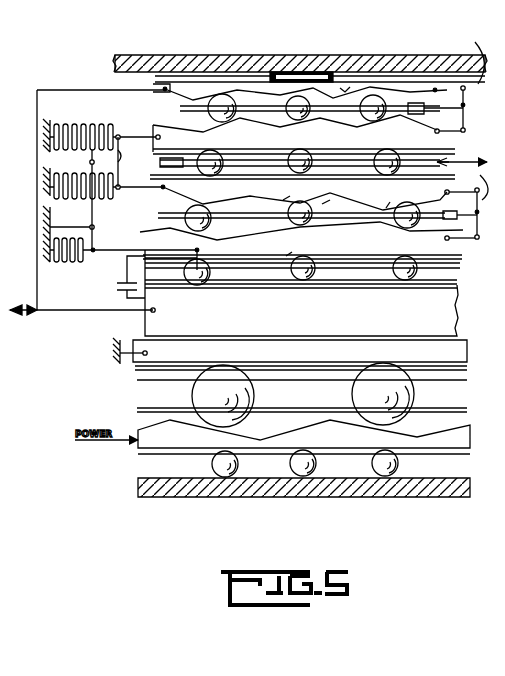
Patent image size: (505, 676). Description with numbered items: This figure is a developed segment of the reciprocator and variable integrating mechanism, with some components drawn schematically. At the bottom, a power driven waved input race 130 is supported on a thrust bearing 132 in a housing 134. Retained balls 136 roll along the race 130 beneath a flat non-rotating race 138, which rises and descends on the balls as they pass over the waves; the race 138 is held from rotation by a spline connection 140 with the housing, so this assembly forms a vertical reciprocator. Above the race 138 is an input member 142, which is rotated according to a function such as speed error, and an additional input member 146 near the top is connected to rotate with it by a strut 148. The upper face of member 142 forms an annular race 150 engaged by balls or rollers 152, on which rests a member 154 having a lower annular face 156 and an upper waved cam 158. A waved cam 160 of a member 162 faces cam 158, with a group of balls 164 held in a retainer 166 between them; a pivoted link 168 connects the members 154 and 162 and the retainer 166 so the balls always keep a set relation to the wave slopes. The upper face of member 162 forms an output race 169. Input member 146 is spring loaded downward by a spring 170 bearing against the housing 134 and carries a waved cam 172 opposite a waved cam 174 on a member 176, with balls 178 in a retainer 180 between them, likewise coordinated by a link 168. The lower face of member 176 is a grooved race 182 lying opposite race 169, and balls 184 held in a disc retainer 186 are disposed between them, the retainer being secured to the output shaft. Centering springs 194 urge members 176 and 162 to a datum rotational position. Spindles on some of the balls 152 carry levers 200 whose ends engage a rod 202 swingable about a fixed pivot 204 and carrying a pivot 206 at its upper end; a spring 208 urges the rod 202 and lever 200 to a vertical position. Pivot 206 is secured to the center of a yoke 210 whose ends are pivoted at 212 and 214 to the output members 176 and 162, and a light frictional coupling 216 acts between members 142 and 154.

The waved input race 130 is at (341, 440).
The thrust bearing 132 is at (212, 464).
The housing 134 is at (204, 57).
The retained balls 136 is at (205, 393).
The flat non-rotating race 138 is at (301, 360).
The spline connection 140 is at (122, 358).
The input member 142 is at (348, 314).
The additional input member 146 is at (158, 88).
The strut 148 is at (38, 102).
The annular race 150 is at (245, 286).
The balls or rollers 152 is at (322, 258).
The member 154 is at (406, 249).
The lower annular face 156 is at (286, 256).
The waved cam 158 is at (238, 234).
The waved cam 160 is at (283, 200).
The member 162 is at (423, 200).
The balls 164 is at (322, 204).
The retainer 166 is at (390, 202).
The pivoted link 168 is at (468, 117).
The race 169 is at (186, 186).
The spring 170 is at (340, 90).
The waved cam 172 is at (330, 97).
The waved cam 174 is at (200, 108).
The member 176 is at (326, 137).
The balls 178 is at (358, 125).
The retainer 180 is at (312, 116).
The grooved race 182 is at (396, 125).
The balls 184 is at (238, 124).
The retainer 186 is at (238, 186).
The centering springs 194 is at (96, 122).
The lever 200 is at (192, 252).
The rod 202 is at (95, 236).
The fixed pivot 204 is at (94, 226).
The pivot 206 is at (90, 162).
The spring 208 is at (64, 262).
The yoke 210 is at (135, 162).
The pivot 212 is at (122, 137).
The pivot 214 is at (120, 189).
The frictional coupling 216 is at (117, 289).